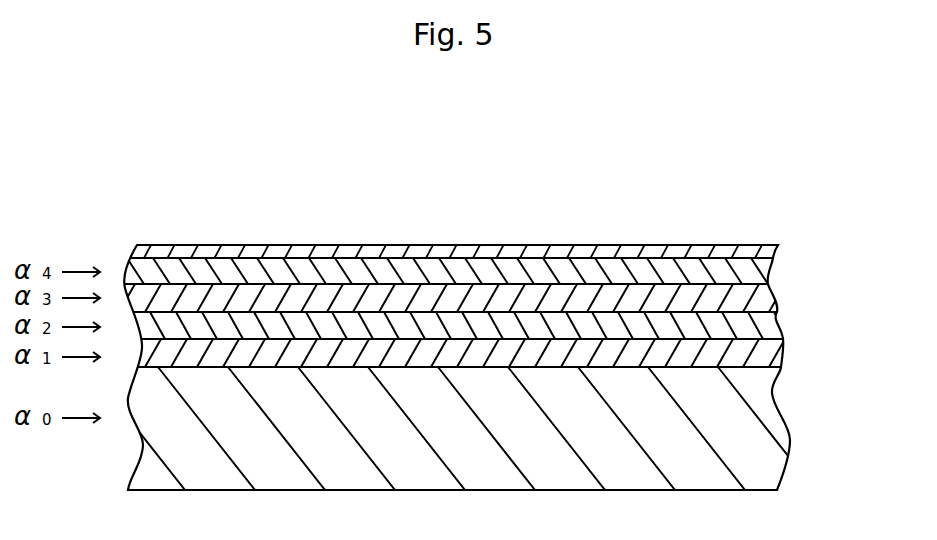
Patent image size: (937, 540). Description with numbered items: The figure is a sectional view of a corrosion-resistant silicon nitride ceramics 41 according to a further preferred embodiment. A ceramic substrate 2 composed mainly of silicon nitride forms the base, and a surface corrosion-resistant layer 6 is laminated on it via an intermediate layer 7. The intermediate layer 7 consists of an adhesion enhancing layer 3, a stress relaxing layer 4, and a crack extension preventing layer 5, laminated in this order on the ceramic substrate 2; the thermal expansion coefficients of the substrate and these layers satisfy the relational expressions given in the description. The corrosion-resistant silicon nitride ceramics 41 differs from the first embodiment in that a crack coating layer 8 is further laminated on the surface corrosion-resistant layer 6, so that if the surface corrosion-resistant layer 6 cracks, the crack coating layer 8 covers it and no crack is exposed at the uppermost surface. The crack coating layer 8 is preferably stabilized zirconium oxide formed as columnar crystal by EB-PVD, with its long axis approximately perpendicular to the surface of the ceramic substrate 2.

The corrosion-resistant silicon nitride ceramics 41 is at (638, 180).
The ceramic substrate 2 is at (762, 422).
The adhesion enhancing layer 3 is at (760, 352).
The stress relaxing layer 4 is at (760, 323).
The crack extension preventing layer 5 is at (745, 306).
The surface corrosion-resistant layer 6 is at (760, 272).
The intermediate layer 7 is at (869, 282).
The crack coating layer 8 is at (778, 245).